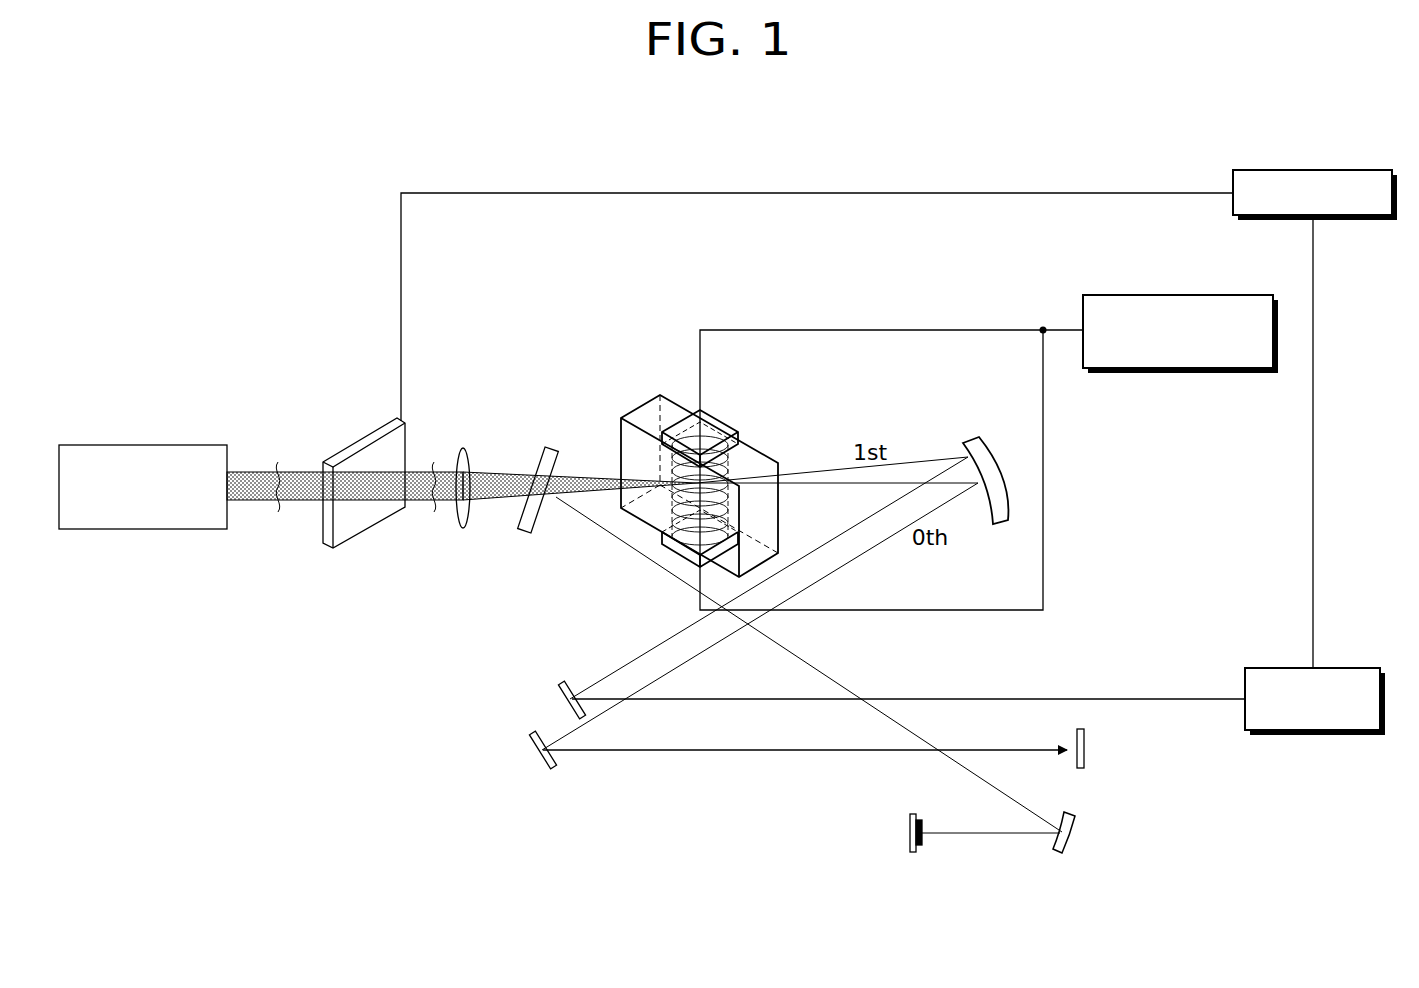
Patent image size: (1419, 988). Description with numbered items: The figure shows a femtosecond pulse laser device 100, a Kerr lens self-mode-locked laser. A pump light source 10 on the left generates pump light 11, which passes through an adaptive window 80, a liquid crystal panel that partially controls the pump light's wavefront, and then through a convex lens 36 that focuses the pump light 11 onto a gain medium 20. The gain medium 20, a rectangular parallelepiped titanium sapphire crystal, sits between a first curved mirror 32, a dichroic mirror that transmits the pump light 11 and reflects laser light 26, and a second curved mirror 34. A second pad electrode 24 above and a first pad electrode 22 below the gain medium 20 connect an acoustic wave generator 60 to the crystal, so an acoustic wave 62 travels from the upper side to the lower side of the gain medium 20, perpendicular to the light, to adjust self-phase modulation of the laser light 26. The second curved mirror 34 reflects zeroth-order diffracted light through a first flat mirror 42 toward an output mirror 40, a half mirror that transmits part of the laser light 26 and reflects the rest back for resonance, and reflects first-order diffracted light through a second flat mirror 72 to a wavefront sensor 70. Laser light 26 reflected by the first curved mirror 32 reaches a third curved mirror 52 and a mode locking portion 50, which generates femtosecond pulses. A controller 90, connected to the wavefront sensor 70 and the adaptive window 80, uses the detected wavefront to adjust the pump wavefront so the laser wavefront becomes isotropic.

The femtosecond pulse laser device 100 is at (1253, 120).
The pump light source 10 is at (190, 445).
The pump light 11 is at (247, 480).
The adaptive window 80 is at (358, 440).
The convex lens 36 is at (466, 450).
The first curved mirror 32 is at (553, 446).
The gain medium 20 is at (767, 456).
The second pad electrode 24 is at (728, 424).
The first pad electrode 22 is at (668, 546).
The acoustic wave 62 is at (728, 506).
The second curved mirror 34 is at (968, 437).
The acoustic wave generator 60 is at (1235, 295).
The controller 90 is at (1352, 170).
The wavefront sensor 70 is at (1340, 668).
The second flat mirror 72 is at (560, 702).
The first flat mirror 42 is at (534, 750).
The laser light 26 is at (765, 752).
The output mirror 40 is at (1085, 749).
The mode locking portion 50 is at (917, 855).
The third curved mirror 52 is at (1055, 855).